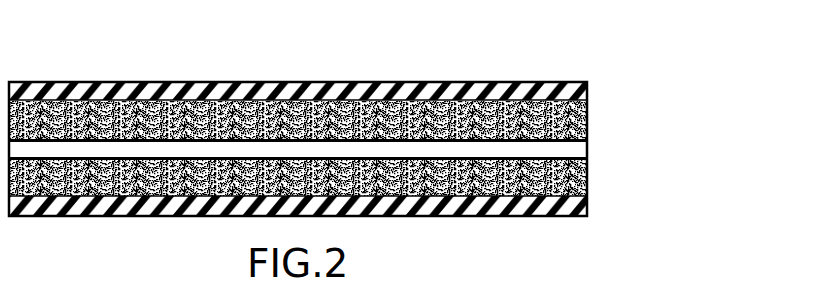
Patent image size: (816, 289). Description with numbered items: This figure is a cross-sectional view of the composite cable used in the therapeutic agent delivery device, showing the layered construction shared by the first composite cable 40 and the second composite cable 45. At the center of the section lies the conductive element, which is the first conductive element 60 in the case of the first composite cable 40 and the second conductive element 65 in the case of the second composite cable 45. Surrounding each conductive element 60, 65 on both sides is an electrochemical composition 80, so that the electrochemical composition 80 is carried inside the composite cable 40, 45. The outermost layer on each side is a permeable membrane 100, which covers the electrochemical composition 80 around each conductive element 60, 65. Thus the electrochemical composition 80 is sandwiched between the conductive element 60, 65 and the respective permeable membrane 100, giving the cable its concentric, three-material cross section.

The first composite cable 40 is at (353, 112).
The second composite cable 45 is at (95, 36).
The permeable membrane 100 is at (588, 83).
The electrochemical composition 80 is at (588, 122).
The first conductive element 60 is at (353, 154).
The second conductive element 65 is at (588, 146).